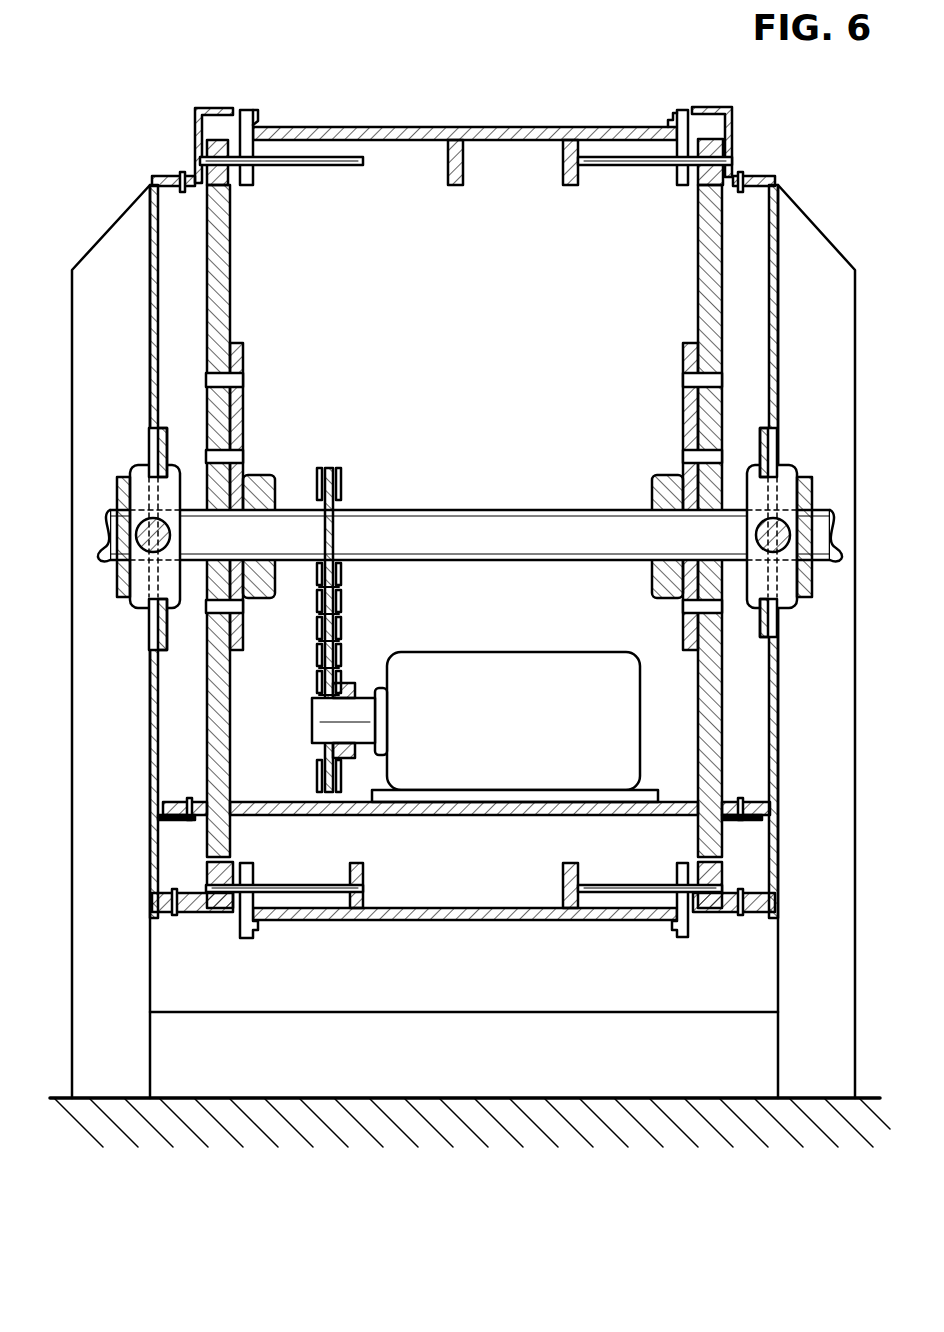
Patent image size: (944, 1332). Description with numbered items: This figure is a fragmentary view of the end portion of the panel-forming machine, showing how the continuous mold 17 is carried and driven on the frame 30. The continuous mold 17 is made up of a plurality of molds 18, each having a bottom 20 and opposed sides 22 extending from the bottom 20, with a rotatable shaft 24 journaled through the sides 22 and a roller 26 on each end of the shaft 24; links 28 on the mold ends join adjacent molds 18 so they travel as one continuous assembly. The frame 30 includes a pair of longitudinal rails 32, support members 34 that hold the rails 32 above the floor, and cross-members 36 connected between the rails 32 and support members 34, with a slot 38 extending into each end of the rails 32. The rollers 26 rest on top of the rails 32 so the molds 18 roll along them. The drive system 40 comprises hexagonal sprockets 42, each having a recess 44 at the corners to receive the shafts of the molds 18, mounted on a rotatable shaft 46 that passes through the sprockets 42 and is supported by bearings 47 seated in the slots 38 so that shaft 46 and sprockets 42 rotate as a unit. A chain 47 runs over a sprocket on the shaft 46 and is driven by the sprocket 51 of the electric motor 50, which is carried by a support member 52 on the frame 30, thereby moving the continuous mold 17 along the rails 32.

The continuous mold 17 is at (683, 106).
The mold 18 is at (247, 112).
The bottom 20 is at (398, 127).
The sides 22 is at (235, 128).
The rotatable shaft 24 is at (603, 162).
The roller 26 is at (217, 145).
The links 28 is at (336, 522).
The frame 30 is at (70, 930).
The rails 32 is at (152, 308).
The support members 34 is at (70, 708).
The cross-members 36 is at (408, 1065).
The slot 38 is at (155, 598).
The drive system 40 is at (727, 277).
The sprockets 42 is at (215, 232).
The recess 44 is at (208, 170).
The rotatable shaft 46 is at (518, 520).
The bearings 47 is at (118, 498).
The motor 50 is at (512, 665).
The sprocket 51 is at (314, 712).
The support member 52 is at (495, 818).